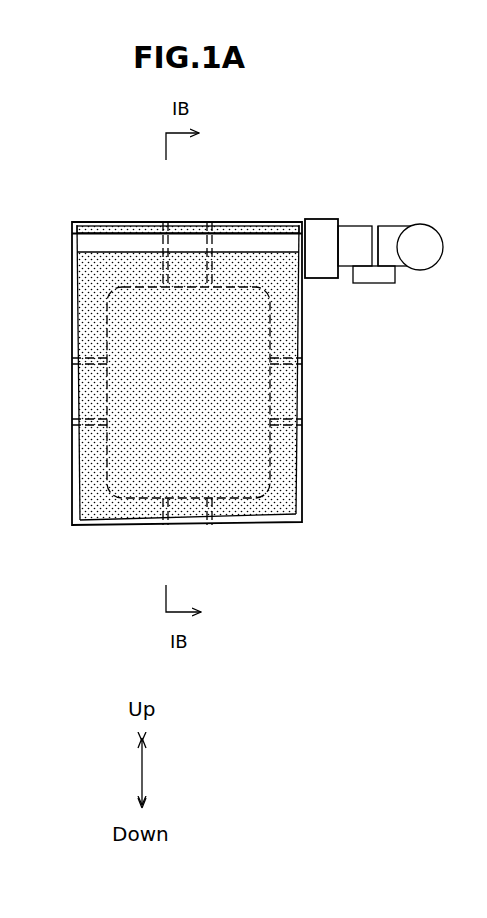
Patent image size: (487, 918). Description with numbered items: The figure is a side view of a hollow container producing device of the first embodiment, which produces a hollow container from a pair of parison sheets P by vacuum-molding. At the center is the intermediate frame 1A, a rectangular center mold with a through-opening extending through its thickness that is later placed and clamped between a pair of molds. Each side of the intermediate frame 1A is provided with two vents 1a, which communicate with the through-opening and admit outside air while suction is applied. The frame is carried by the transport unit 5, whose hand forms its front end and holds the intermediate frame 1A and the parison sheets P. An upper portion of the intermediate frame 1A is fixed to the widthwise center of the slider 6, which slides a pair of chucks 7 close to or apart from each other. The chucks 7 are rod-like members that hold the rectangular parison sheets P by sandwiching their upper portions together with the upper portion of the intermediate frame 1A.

The intermediate frame 1A is at (208, 375).
The vents 1a is at (165, 213).
The transport unit 5 is at (374, 198).
The slider 6 is at (320, 232).
The chucks 7 is at (88, 246).
The parison sheets P is at (280, 518).